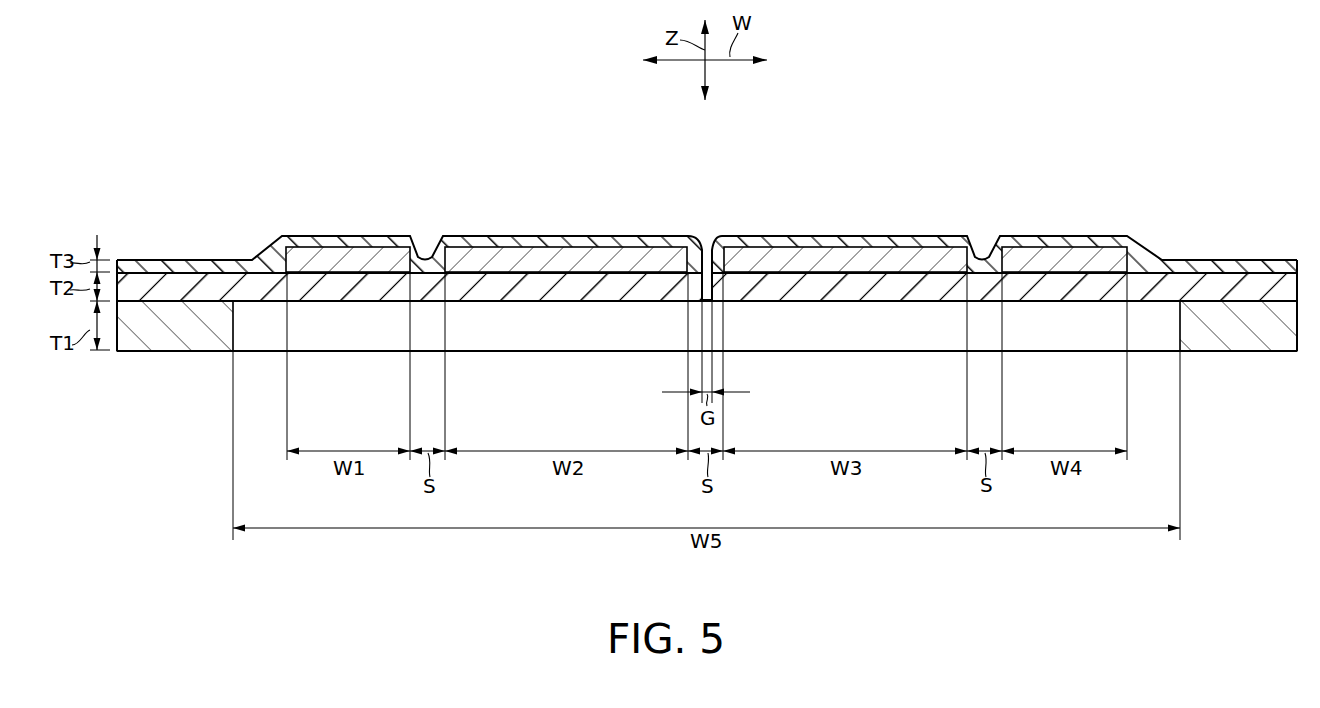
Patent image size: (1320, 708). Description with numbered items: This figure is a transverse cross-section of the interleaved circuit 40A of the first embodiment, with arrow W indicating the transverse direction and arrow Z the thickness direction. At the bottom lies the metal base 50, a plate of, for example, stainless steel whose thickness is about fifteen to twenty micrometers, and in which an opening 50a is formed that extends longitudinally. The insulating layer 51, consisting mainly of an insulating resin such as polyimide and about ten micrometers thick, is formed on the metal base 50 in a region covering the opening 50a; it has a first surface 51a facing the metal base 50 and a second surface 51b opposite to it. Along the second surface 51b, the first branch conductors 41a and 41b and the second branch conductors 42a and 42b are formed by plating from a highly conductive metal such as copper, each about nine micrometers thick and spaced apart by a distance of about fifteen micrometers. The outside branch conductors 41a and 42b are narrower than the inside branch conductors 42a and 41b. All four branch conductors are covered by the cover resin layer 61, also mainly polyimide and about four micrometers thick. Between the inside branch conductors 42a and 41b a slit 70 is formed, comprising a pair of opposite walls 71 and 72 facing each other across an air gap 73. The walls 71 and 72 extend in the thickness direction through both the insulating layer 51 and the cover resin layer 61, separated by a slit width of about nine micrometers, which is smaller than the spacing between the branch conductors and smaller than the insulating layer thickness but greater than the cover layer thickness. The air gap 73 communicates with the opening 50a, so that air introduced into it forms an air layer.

The interleaved circuit 40A is at (707, 240).
The first branch conductor 41a is at (373, 253).
The first branch conductor 41b is at (863, 258).
The second branch conductor 42a is at (577, 260).
The second branch conductor 42b is at (1075, 258).
The metal base 50 is at (184, 340).
The opening 50a is at (587, 337).
The insulating layer 51 is at (490, 292).
The first surface 51a is at (359, 304).
The second surface 51b is at (327, 257).
The cover resin layer 61 is at (482, 234).
The slit 70 is at (701, 225).
The opposite wall 71 is at (693, 288).
The opposite wall 72 is at (713, 293).
The air gap 73 is at (712, 298).